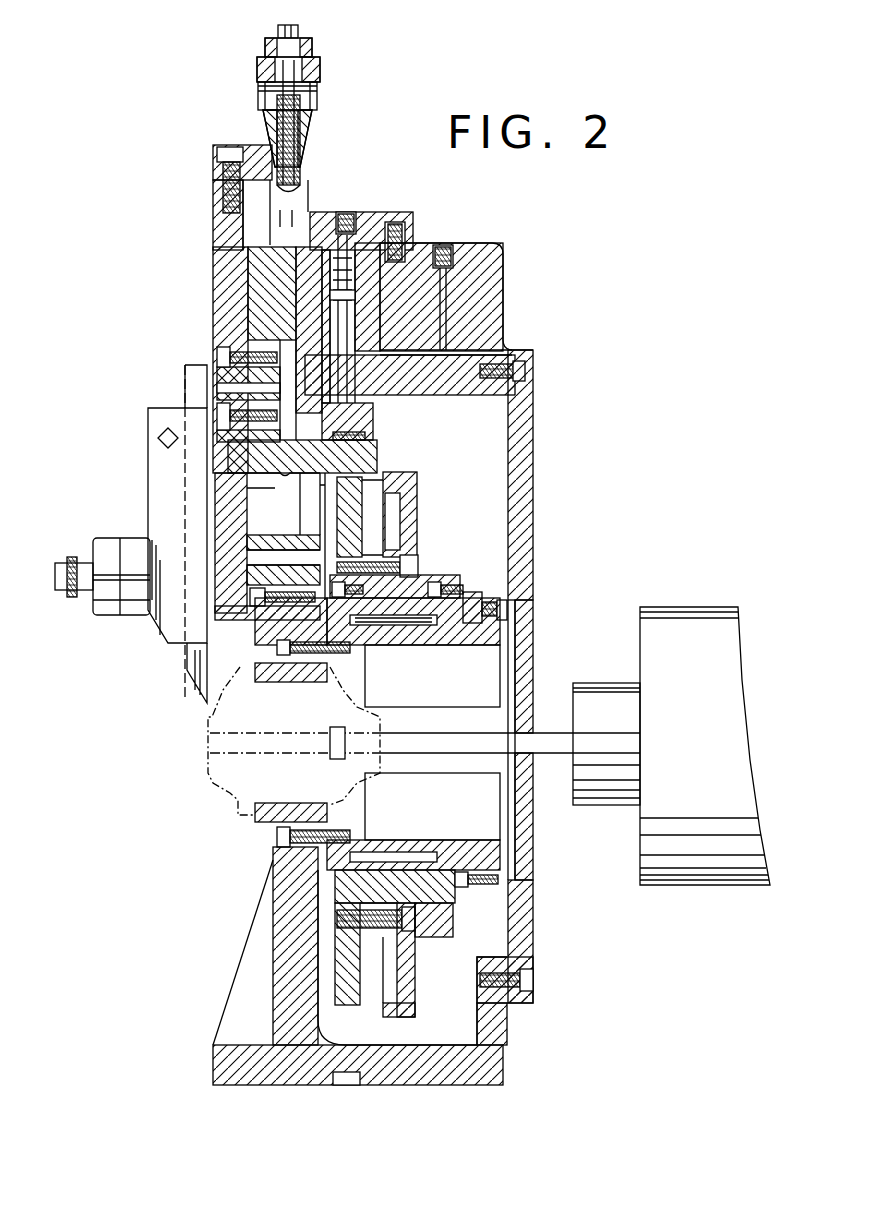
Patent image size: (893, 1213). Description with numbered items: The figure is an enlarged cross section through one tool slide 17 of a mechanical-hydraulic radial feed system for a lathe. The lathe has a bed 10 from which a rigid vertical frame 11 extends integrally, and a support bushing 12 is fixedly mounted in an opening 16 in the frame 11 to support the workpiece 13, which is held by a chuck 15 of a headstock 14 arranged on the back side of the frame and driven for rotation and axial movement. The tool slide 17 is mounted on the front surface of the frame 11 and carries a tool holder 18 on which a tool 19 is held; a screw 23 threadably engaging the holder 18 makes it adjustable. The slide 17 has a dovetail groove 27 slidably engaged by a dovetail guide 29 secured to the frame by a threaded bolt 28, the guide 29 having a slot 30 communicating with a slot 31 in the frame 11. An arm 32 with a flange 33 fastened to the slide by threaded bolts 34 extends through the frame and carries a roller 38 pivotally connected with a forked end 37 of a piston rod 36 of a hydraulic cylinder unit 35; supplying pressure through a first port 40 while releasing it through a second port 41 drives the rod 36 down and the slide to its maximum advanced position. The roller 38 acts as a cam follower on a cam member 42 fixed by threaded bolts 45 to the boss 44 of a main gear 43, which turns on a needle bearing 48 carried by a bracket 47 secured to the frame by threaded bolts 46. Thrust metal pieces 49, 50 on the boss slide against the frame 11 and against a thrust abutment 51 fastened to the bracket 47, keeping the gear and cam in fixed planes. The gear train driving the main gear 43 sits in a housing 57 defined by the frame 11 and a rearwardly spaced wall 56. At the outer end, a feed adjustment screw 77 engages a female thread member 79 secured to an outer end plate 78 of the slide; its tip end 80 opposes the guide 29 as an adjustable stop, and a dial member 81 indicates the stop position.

The bed 10 is at (485, 1068).
The vertical frame 11 is at (270, 962).
The support bushing 12 is at (225, 812).
The workpiece 13 is at (420, 733).
The headstock 14 is at (688, 607).
The chuck 15 is at (602, 700).
The opening 16 is at (299, 794).
The tool slide 17 is at (212, 315).
The tool holder 18 is at (148, 487).
The tool 19 is at (193, 690).
The screw 23 is at (68, 560).
The dovetail groove 27 is at (243, 218).
The threaded bolt 28 is at (262, 607).
The dovetail guide 29 is at (258, 272).
The slot 30 is at (287, 525).
The slot 31 is at (324, 525).
The arm 32 is at (370, 462).
The flange 33 is at (288, 360).
The threaded bolts 34 is at (216, 352).
The hydraulic cylinder unit 35 is at (405, 230).
The piston rod 36 is at (355, 330).
The forked end 37 is at (360, 416).
The roller 38 is at (365, 436).
The first port 40 is at (346, 212).
The second port 41 is at (460, 230).
The cam member 42 is at (352, 530).
The main gear 43 is at (417, 500).
The boss 44 is at (420, 585).
The threaded bolts 45 is at (418, 568).
The threaded bolts 46 is at (295, 682).
The bracket 47 is at (460, 645).
The needle bearing 48 is at (395, 645).
The thrust metal piece 49 is at (300, 640).
The thrust metal piece 50 is at (490, 600).
The thrust abutment 51 is at (478, 592).
The wall 56 is at (533, 495).
The housing 57 is at (484, 466).
The feed adjustment screw 77 is at (300, 32).
The outer end plate 78 is at (255, 148).
The female thread member 79 is at (300, 138).
The tip end 80 is at (300, 192).
The dial member 81 is at (317, 95).